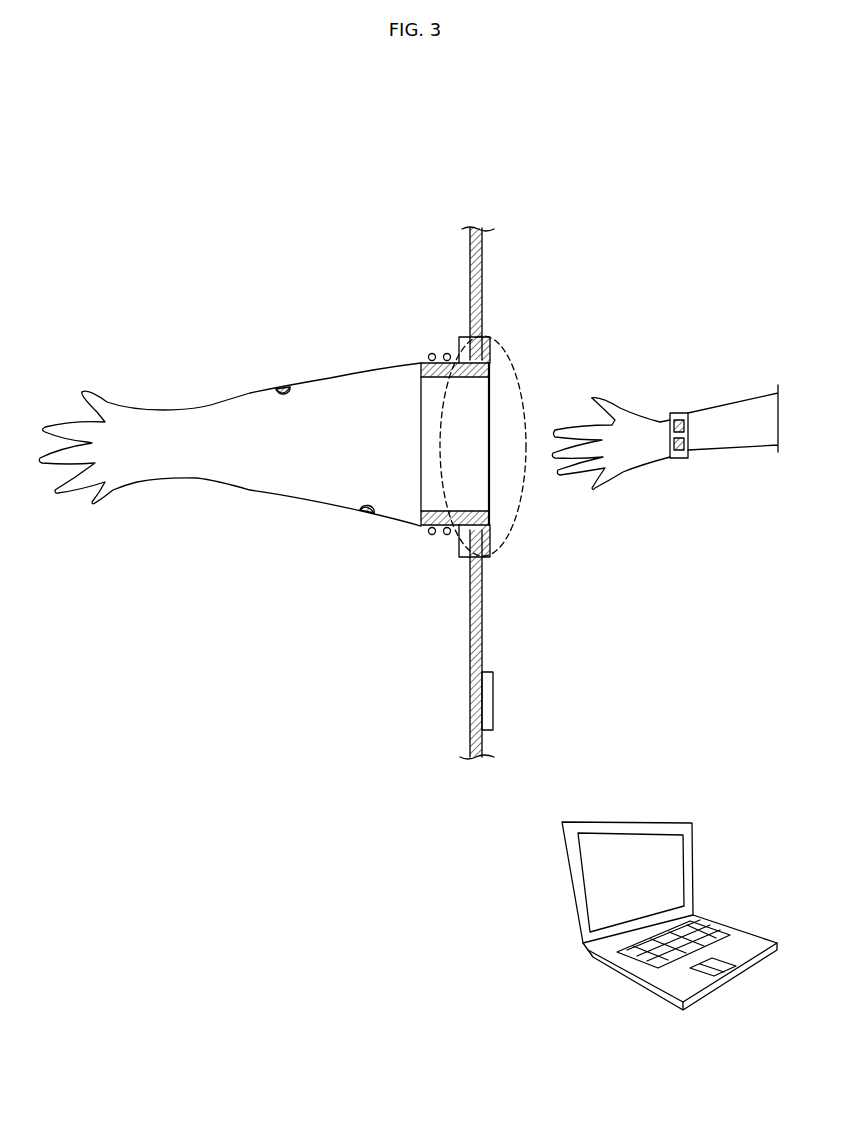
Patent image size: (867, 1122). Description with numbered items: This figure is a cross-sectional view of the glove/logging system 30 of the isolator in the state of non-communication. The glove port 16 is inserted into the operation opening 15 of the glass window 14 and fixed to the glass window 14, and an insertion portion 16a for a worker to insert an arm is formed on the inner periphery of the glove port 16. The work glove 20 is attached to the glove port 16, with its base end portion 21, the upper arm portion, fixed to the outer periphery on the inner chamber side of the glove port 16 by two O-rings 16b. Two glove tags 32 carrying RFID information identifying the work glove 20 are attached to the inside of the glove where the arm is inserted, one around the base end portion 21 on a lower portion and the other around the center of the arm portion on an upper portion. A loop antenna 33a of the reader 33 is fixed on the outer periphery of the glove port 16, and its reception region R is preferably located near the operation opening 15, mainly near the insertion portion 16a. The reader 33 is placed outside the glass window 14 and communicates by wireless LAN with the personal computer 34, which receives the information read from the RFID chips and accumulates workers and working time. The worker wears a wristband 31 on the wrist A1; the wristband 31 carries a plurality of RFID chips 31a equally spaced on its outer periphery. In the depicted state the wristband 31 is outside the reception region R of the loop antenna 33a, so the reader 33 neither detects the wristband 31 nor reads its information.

The glove/logging system 30 is at (567, 214).
The glass window 14 is at (470, 250).
The reader 33 is at (493, 700).
The glove port 16 is at (485, 535).
The insertion portion 16a is at (466, 428).
The loop antenna 33a is at (483, 345).
The O-rings 16b is at (447, 353).
The reception region R is at (520, 368).
The work glove 20 is at (215, 403).
The base end portion 21 is at (399, 361).
The glove tag 32 is at (285, 395).
The operation opening 15 is at (542, 497).
The wristband 31 is at (690, 437).
The RFID chips 31a is at (680, 416).
The wrist A1 is at (665, 423).
The personal computer 34 is at (658, 820).